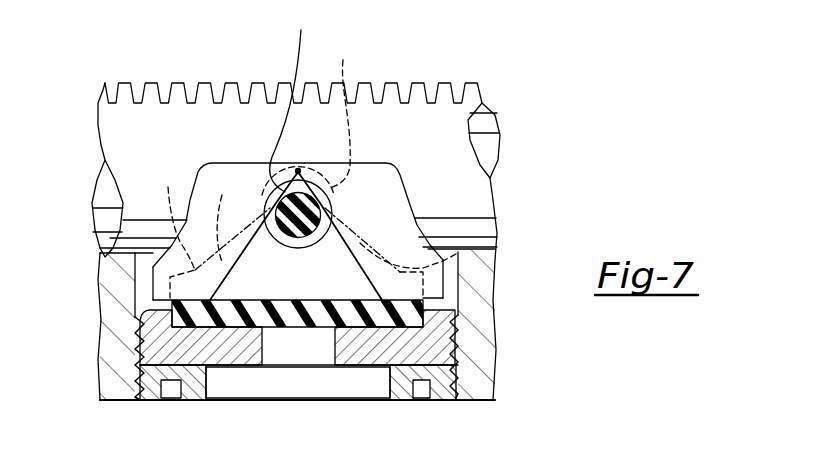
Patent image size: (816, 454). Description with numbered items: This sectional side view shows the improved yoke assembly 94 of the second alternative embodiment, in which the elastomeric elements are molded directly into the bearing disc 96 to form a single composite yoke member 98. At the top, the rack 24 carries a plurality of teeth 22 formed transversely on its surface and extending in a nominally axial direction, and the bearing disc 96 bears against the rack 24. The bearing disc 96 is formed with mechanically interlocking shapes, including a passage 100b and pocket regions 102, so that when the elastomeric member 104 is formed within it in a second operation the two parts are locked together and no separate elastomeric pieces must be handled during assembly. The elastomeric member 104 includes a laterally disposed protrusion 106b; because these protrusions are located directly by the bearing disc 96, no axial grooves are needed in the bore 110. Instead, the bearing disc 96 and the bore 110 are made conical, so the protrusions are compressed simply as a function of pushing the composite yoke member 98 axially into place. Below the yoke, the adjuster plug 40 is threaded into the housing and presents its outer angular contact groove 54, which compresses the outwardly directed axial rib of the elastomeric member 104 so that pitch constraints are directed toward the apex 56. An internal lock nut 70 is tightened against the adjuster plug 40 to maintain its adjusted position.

The teeth 22 is at (246, 88).
The rack 24 is at (98, 133).
The adjuster plug 40 is at (348, 368).
The outer angular contact groove 54 is at (428, 314).
The apex 56 is at (298, 170).
The internal lock nut 70 is at (438, 398).
The improved yoke assembly 94 is at (424, 62).
The bearing disc 96 is at (383, 213).
The composite yoke member 98 is at (263, 213).
The passage 100b is at (699, 7).
The pocket regions 102 is at (515, 258).
The elastomeric member 104 is at (426, 311).
The laterally disposed protrusion 106b is at (295, 100).
The bore 110 is at (460, 285).